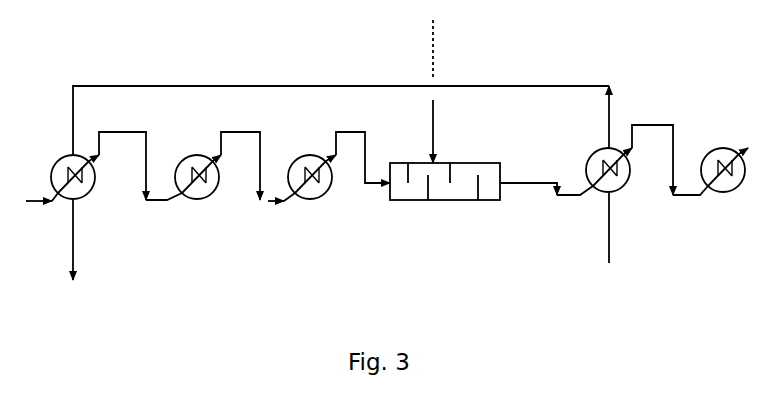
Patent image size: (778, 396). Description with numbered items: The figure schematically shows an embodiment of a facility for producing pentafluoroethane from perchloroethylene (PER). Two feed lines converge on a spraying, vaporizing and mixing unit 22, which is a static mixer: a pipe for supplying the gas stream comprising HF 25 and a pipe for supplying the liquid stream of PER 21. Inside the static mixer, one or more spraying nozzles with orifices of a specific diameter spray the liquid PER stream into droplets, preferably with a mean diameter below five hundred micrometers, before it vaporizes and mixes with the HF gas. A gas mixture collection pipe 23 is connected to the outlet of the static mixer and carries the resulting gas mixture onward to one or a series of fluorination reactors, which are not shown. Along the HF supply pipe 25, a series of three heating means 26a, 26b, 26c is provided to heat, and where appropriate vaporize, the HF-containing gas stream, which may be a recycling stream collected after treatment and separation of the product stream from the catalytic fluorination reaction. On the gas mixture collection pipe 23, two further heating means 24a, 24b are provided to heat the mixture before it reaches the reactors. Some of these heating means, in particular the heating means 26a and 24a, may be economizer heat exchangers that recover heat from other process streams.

The pipe for supplying the liquid stream of PER 21 is at (445, 91).
The spraying, vaporizing and mixing unit 22 is at (445, 169).
The gas mixture collection pipe 23 is at (546, 178).
The heating means 24a is at (617, 174).
The heating means 24b is at (729, 179).
The pipe for supplying the gas stream comprising HF 25 is at (363, 147).
The heating means 26a is at (72, 217).
The heating means 26b is at (202, 181).
The heating means 26c is at (319, 181).